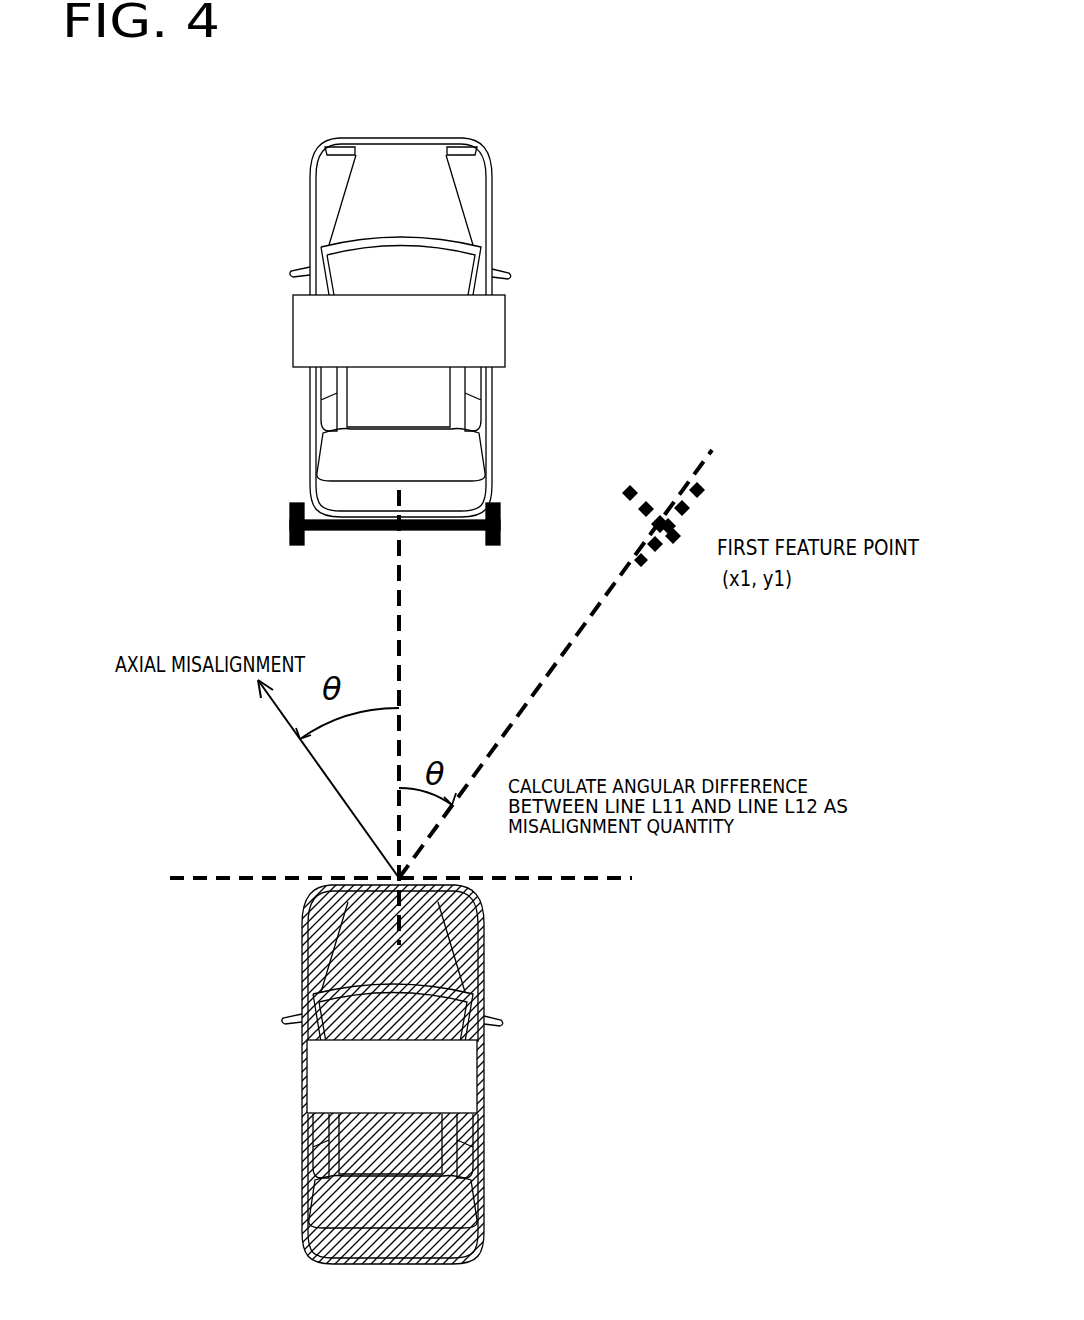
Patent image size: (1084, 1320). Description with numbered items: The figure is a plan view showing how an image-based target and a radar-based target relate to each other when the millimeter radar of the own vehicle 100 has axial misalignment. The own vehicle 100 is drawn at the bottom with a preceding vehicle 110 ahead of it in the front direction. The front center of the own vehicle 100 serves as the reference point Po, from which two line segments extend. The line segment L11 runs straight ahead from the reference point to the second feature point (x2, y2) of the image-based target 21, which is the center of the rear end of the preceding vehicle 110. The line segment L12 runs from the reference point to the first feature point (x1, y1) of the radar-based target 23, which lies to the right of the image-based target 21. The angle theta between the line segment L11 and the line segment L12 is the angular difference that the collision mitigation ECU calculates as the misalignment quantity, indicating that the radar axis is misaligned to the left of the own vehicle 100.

The preceding vehicle 110 is at (494, 202).
The own vehicle 100 is at (485, 968).
The radar-based target 23 is at (682, 537).
The image-based target 21 is at (398, 546).
The line segment L11 is at (399, 656).
The line segment L12 is at (572, 647).